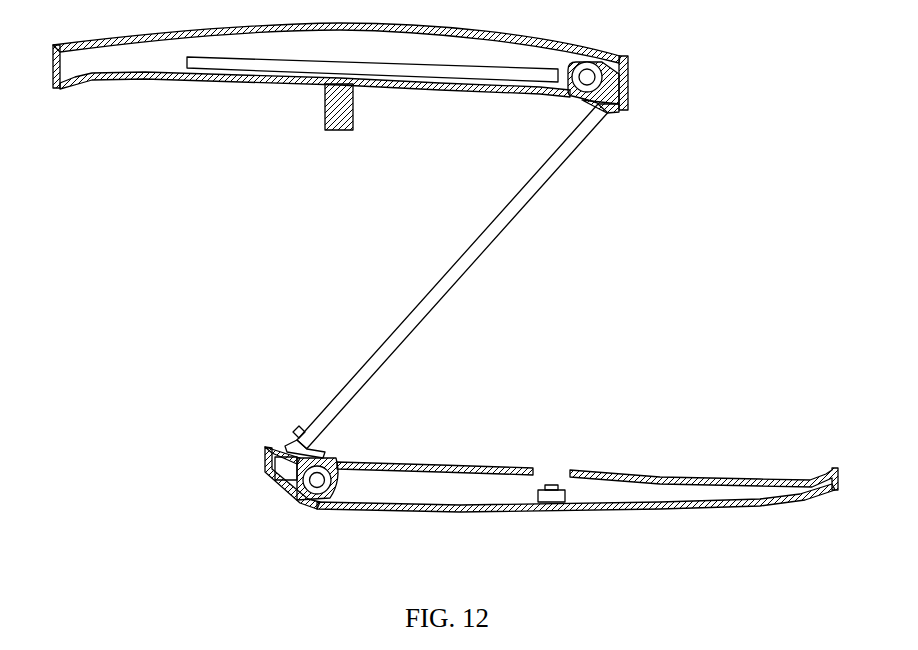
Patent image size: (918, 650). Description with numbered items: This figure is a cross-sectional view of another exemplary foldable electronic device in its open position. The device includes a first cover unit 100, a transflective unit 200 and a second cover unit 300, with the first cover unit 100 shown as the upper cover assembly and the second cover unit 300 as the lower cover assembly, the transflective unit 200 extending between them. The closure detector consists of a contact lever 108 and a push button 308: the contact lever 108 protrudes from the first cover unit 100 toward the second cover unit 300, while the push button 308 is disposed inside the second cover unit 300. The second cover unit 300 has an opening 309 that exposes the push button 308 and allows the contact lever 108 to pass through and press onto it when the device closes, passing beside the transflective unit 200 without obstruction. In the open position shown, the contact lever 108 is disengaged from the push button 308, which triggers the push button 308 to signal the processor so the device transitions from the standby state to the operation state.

The first cover unit 100 is at (122, 82).
The contact lever 108 is at (325, 108).
The transflective unit 200 is at (452, 278).
The second cover unit 300 is at (697, 478).
The push button 308 is at (553, 485).
The opening 309 is at (560, 476).